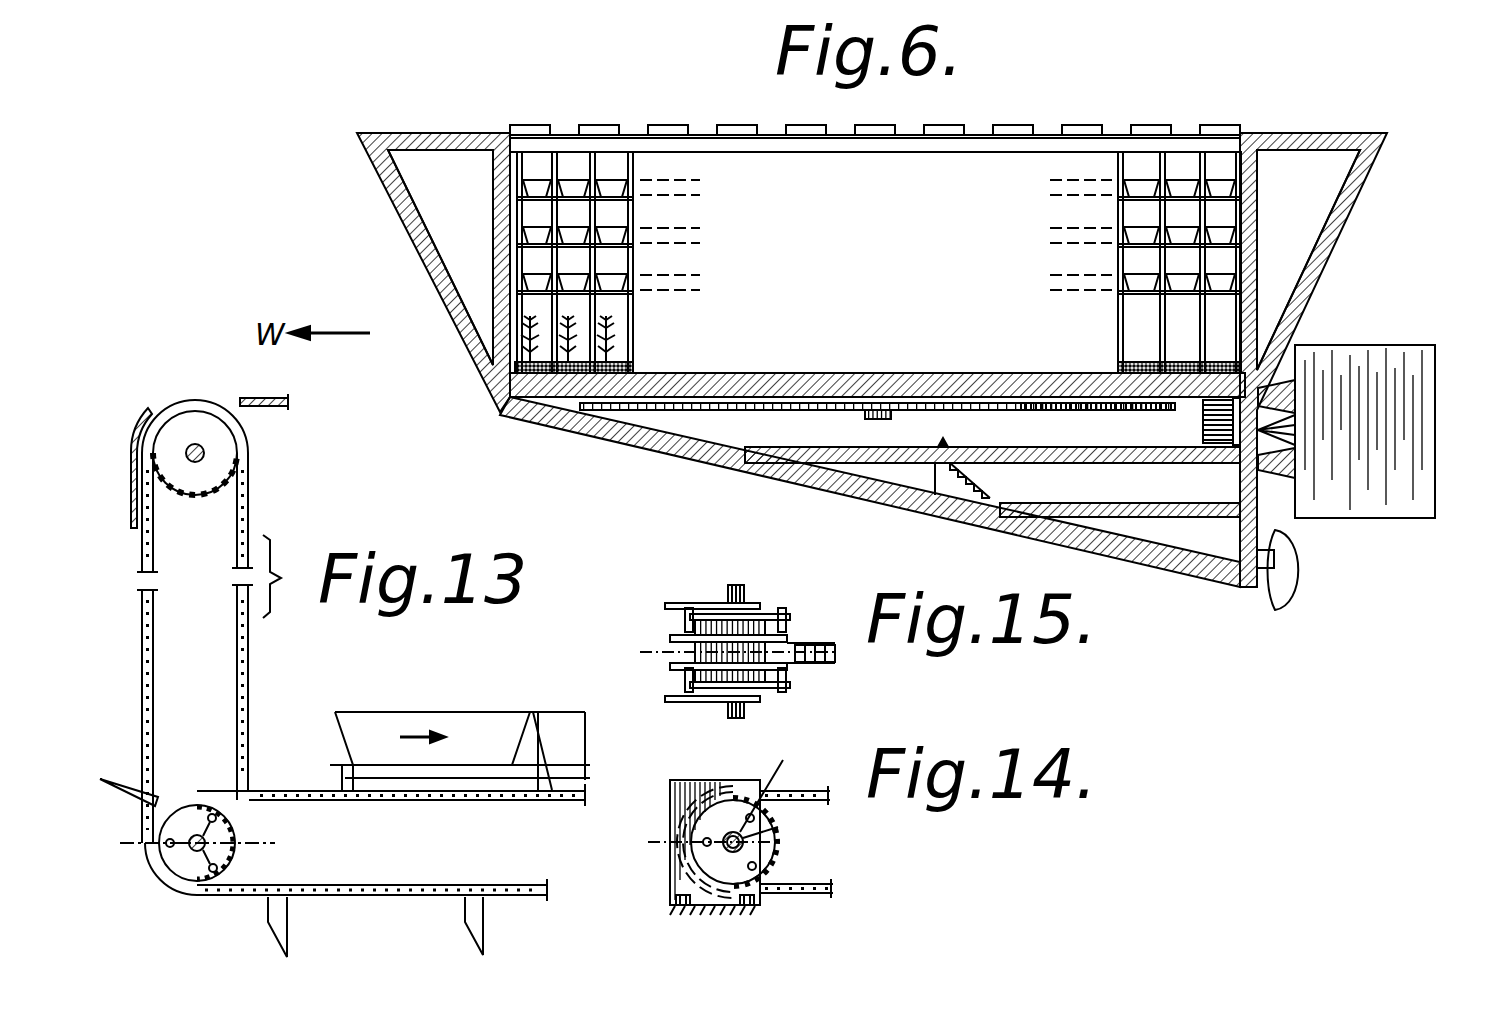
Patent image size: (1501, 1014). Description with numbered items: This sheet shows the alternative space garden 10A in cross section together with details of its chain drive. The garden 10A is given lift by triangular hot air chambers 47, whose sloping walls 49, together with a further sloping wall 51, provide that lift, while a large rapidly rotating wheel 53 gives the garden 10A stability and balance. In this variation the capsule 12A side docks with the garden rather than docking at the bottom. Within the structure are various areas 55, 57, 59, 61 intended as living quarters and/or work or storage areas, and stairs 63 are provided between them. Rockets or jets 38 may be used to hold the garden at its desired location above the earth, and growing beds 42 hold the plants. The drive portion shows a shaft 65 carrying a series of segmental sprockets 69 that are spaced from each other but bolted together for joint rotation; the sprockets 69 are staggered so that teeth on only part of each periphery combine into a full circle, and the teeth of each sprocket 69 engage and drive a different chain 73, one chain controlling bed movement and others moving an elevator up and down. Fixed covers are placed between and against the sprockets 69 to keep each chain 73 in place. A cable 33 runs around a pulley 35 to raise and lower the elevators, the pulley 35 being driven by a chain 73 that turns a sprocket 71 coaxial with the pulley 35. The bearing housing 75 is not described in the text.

In FIG. 6, the garden 10A is at (1335, 84).
In FIG. 6, the capsule 12A is at (1462, 320).
In FIG. 13, the cable 33 is at (275, 408).
In FIG. 13, the pulley 35 is at (240, 496).
In FIG. 6, the rockets or jets 38 is at (1295, 580).
In FIG. 13, the bed 42 is at (540, 710).
In FIG. 6, the triangular hot air chambers 47 is at (470, 200).
In FIG. 6, the sloping walls 49 is at (410, 242).
In FIG. 6, the sloping wall 51 is at (940, 506).
In FIG. 6, the wheel 53 is at (1020, 405).
In FIG. 6, the area 55 is at (1158, 440).
In FIG. 6, the area 57 is at (1170, 499).
In FIG. 6, the area 59 is at (930, 486).
In FIG. 6, the area 61 is at (1235, 550).
In FIG. 6, the stairs 63 is at (978, 474).
In FIG. 13, the shaft 65 is at (250, 840).
In FIG. 15, the shaft 65 is at (746, 592).
In FIG. 13, the segmental sprockets 69 is at (252, 852).
In FIG. 15, the segmental sprockets 69 is at (789, 620).
In FIG. 14, the segmental sprockets 69 is at (785, 846).
In FIG. 13, the sprocket 71 is at (160, 448).
In FIG. 13, the chain 73 is at (237, 673).
In FIG. 14, the chain 73 is at (830, 885).
In FIG. 15, the bearing housing 75 is at (685, 684).
In FIG. 14, the bearing housing 75 is at (700, 882).